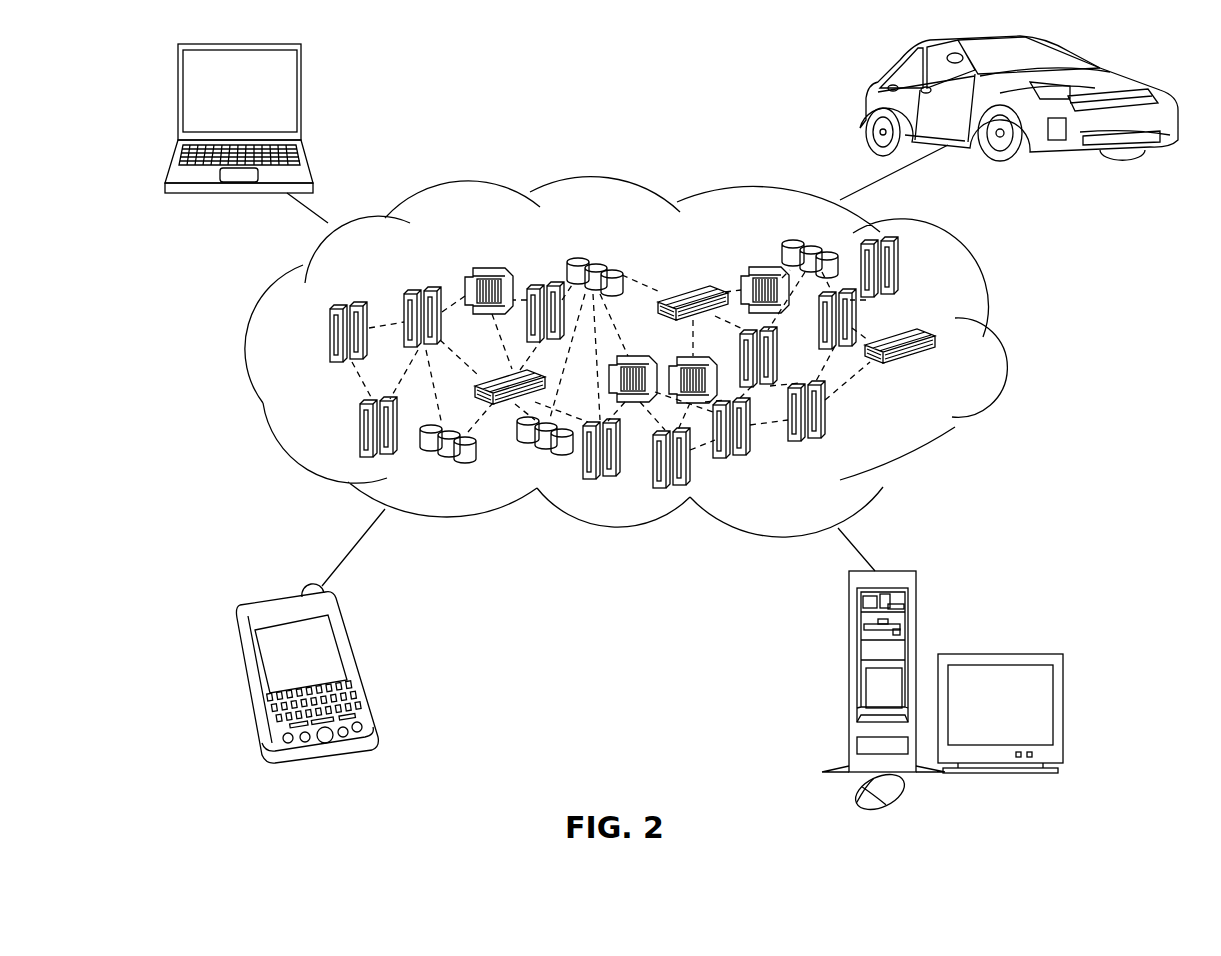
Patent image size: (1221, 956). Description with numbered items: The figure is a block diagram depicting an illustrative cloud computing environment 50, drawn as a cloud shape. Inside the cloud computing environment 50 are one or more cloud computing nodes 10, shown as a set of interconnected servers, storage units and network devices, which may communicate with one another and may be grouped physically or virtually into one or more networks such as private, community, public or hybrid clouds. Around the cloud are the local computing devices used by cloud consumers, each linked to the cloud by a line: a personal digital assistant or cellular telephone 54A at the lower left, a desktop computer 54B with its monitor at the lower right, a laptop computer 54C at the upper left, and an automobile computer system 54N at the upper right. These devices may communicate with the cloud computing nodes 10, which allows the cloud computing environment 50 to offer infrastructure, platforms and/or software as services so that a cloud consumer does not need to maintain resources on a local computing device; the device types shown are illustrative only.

The cloud computing node 10 is at (921, 440).
The cloud computing environment 50 is at (996, 348).
The personal digital assistant or cellular telephone 54A is at (348, 637).
The desktop computer 54B is at (848, 623).
The laptop computer 54C is at (302, 80).
The automobile computer system 54N is at (866, 96).